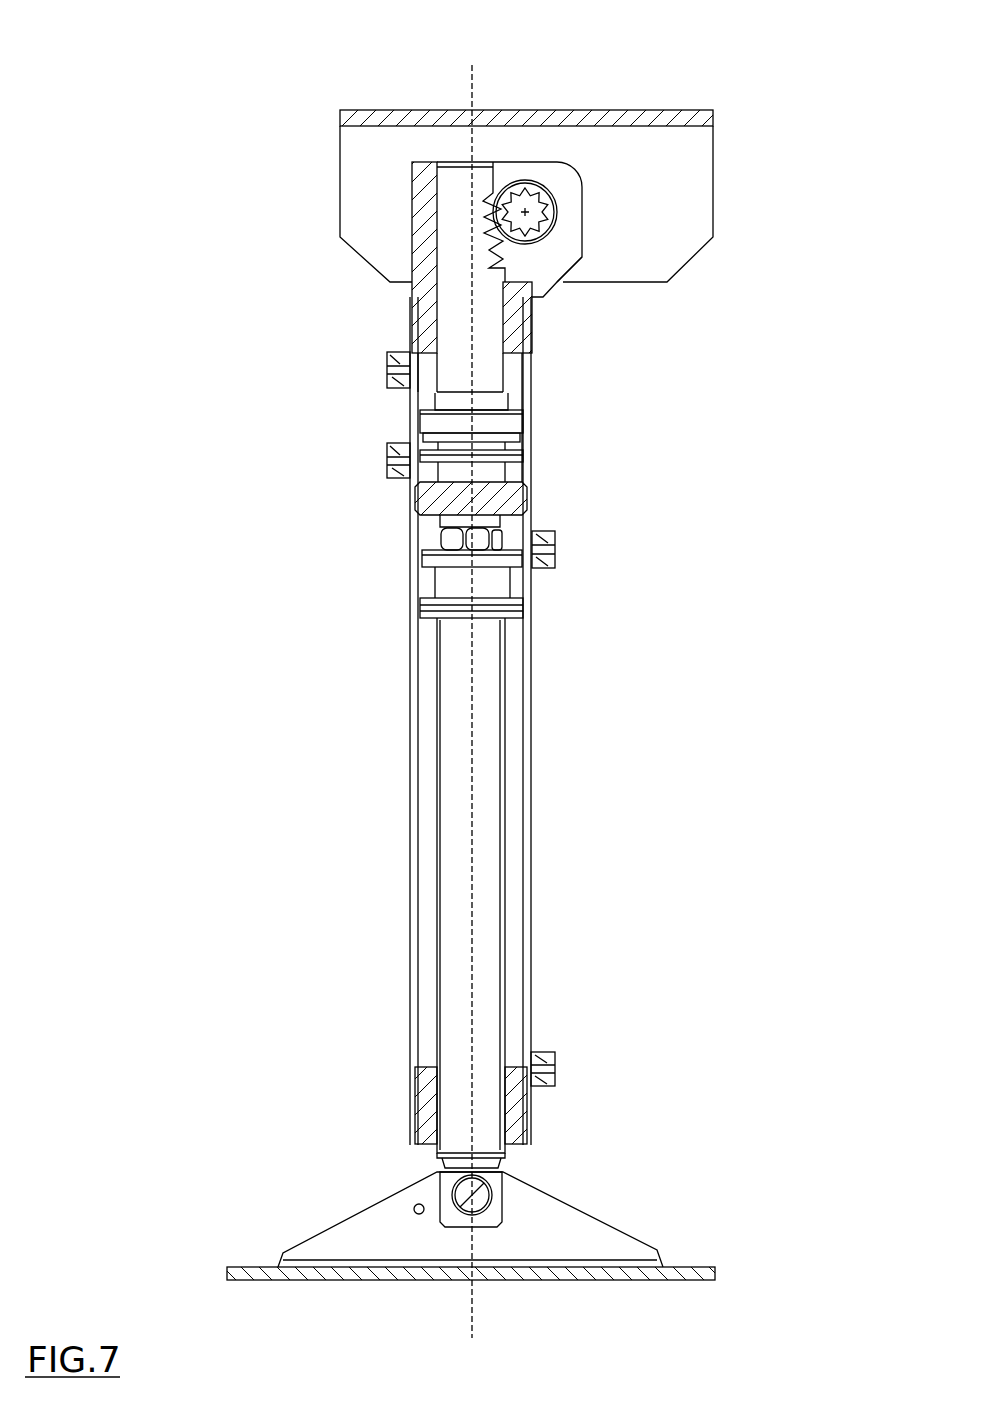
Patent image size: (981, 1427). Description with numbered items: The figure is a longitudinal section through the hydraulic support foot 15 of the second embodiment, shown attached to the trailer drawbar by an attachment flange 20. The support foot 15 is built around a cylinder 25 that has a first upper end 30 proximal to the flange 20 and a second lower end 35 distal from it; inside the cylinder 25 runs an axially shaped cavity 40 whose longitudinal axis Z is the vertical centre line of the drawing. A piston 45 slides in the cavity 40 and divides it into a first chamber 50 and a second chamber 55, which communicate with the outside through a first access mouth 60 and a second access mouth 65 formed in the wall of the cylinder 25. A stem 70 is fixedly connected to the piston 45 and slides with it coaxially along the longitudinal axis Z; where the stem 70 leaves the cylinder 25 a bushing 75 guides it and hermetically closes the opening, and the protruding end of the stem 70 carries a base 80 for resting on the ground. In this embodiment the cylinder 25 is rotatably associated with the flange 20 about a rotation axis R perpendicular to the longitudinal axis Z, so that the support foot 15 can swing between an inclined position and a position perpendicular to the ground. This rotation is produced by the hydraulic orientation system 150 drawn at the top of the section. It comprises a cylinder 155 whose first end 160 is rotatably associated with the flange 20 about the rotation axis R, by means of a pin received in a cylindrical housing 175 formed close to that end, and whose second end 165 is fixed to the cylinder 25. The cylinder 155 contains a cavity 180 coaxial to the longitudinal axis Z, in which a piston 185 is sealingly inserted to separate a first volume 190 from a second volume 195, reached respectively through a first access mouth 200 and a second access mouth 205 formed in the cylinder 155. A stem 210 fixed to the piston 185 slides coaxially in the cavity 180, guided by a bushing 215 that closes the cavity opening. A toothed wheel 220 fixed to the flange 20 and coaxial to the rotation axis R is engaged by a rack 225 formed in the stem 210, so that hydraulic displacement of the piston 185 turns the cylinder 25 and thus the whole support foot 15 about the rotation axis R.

The support foot 15 is at (150, 123).
The longitudinal axis Z is at (470, 88).
The attachment flange 20 is at (694, 120).
The cylinder 25 is at (531, 768).
The first upper end 30 is at (430, 539).
The second lower end 35 is at (412, 1072).
The cavity 40 is at (434, 657).
The piston 45 is at (500, 597).
The first chamber 50 is at (420, 555).
The second chamber 55 is at (519, 858).
The first access mouth 60 is at (558, 536).
The second access mouth 65 is at (558, 1071).
The stem 70 is at (487, 950).
The bushing 75 is at (412, 1142).
The base 80 is at (690, 1268).
The orientation system 150 is at (626, 296).
The cylinder 155 is at (532, 393).
The first end 160 is at (570, 187).
The second end 165 is at (535, 460).
The cylindrical housing 175 is at (533, 205).
The cavity 180 is at (517, 356).
The piston 185 is at (535, 407).
The first volume 190 is at (435, 487).
The second volume 195 is at (420, 420).
The first access mouth 200 is at (392, 463).
The second access mouth 205 is at (392, 365).
The stem 210 is at (455, 323).
The bushing 215 is at (412, 250).
The toothed wheel 220 is at (560, 222).
The rack 225 is at (497, 200).
The rotation axis R is at (553, 188).